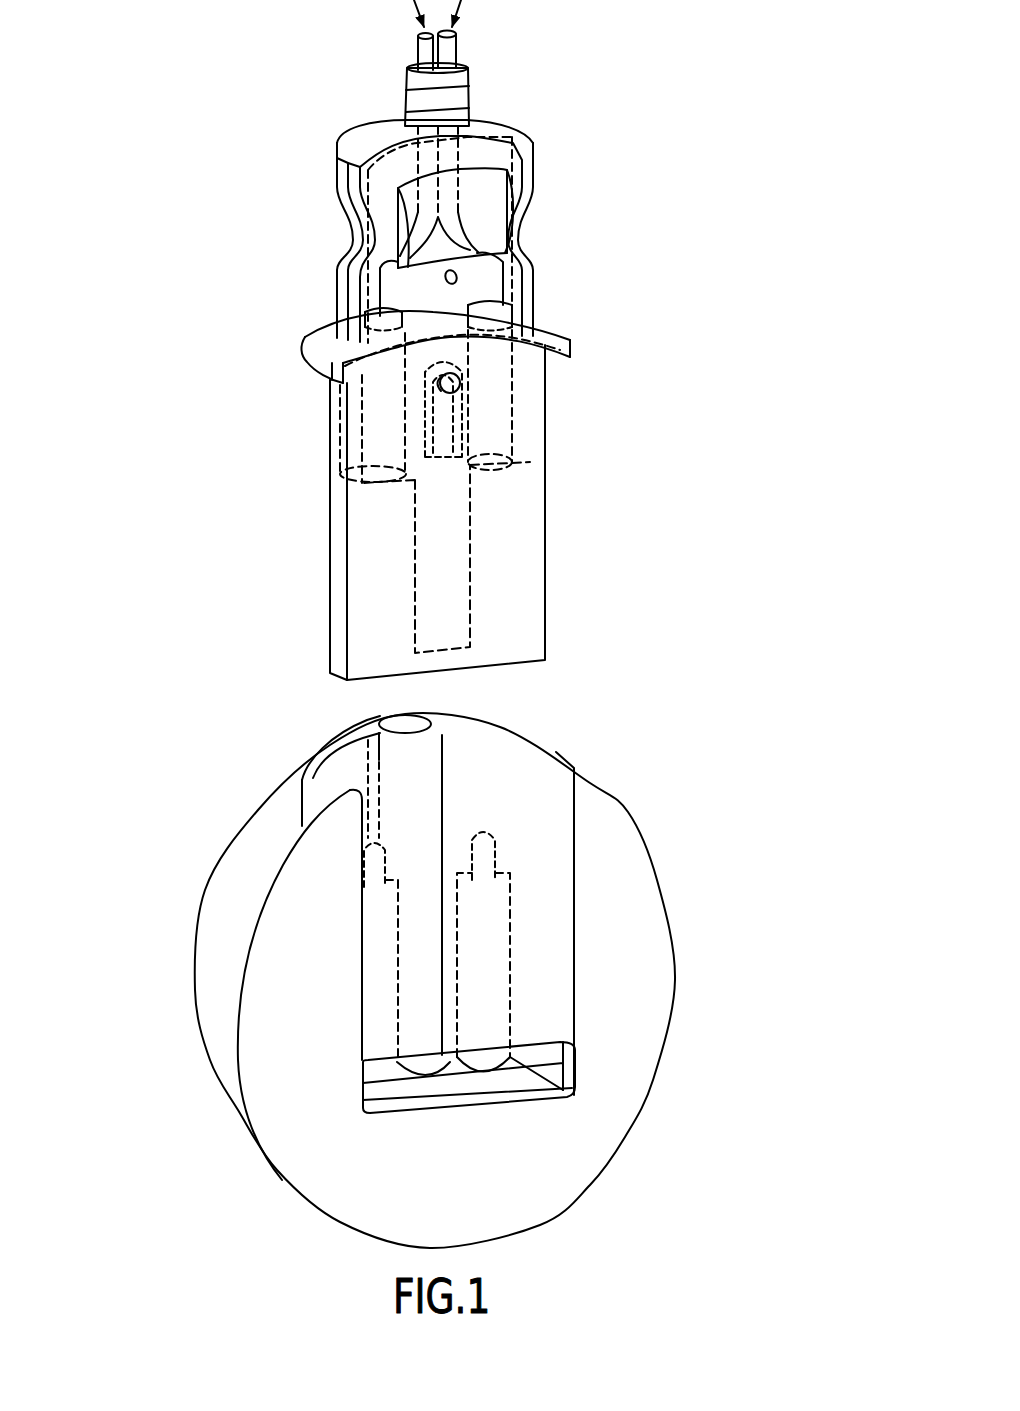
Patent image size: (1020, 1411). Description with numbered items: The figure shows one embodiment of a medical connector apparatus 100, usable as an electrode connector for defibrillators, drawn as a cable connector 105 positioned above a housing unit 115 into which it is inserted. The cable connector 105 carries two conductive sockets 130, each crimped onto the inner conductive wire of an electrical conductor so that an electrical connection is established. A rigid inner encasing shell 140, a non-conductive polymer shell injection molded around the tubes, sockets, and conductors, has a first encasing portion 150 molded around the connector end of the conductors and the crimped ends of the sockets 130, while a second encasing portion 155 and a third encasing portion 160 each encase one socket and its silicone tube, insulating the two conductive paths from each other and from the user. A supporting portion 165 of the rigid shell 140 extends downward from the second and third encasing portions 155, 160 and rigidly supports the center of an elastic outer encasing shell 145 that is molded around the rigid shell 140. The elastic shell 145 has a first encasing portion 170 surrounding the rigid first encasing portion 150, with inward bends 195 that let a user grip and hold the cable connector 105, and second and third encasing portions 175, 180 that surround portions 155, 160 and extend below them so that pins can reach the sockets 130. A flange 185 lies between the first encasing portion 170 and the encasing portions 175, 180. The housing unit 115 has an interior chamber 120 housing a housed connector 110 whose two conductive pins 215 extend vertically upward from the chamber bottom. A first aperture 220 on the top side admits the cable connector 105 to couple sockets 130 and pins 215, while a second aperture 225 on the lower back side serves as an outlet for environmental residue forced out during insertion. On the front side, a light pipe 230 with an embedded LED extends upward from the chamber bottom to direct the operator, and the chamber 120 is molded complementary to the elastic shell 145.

The medical connector apparatus 100 is at (770, 166).
The cable connector 105 is at (233, 330).
The housed connector 110 is at (486, 937).
The housing unit 115 is at (688, 892).
The interior chamber 120 is at (387, 1091).
The conductive sockets 130 is at (517, 302).
The rigid inner encasing shell 140 is at (517, 128).
The elastic outer encasing shell 145 is at (541, 136).
The first encasing portion 150 is at (537, 250).
The second encasing portion 155 is at (542, 412).
The third encasing portion 160 is at (337, 428).
The supporting portion 165 is at (475, 548).
The first encasing portion 170 is at (337, 288).
The second encasing portion 175 is at (550, 494).
The third encasing portion 180 is at (326, 531).
The flange 185 is at (583, 340).
The inward bends 195 is at (536, 200).
The conductive pins 215 is at (387, 846).
The first aperture 220 is at (348, 770).
The second aperture 225 is at (518, 1079).
The light pipe 230 is at (447, 762).